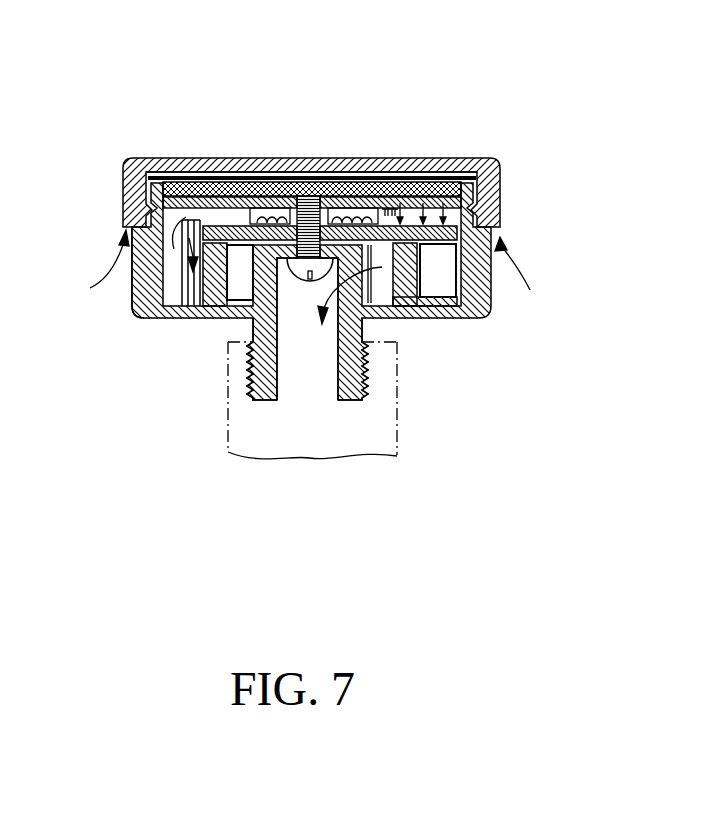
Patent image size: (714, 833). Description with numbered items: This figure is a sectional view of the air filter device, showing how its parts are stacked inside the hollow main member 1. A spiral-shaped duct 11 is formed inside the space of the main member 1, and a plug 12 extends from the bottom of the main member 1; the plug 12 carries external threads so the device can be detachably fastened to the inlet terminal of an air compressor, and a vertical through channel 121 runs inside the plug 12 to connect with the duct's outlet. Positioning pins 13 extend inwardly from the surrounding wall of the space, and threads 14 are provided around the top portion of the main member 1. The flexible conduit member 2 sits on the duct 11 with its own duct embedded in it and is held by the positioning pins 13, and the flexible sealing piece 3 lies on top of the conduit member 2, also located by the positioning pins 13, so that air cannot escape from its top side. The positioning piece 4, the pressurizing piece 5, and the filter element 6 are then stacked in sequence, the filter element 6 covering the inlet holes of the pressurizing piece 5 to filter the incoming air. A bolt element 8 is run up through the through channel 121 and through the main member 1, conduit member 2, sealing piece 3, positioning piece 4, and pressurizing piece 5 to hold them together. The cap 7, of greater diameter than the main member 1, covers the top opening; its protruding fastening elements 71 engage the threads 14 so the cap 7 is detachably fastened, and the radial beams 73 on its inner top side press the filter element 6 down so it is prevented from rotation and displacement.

The main member 1 is at (492, 303).
The conduit member 2 is at (498, 184).
The sealing piece 3 is at (207, 309).
The positioning piece 4 is at (435, 192).
The pressurizing piece 5 is at (236, 198).
The filter element 6 is at (190, 162).
The cap 7 is at (348, 160).
The fastening element 71 is at (135, 196).
The radial beam 73 is at (242, 186).
The bolt element 8 is at (299, 281).
The duct 11 is at (393, 320).
The plug 12 is at (362, 374).
The through channel 121 is at (310, 345).
The positioning pin 13 is at (190, 279).
The threads 14 is at (130, 264).